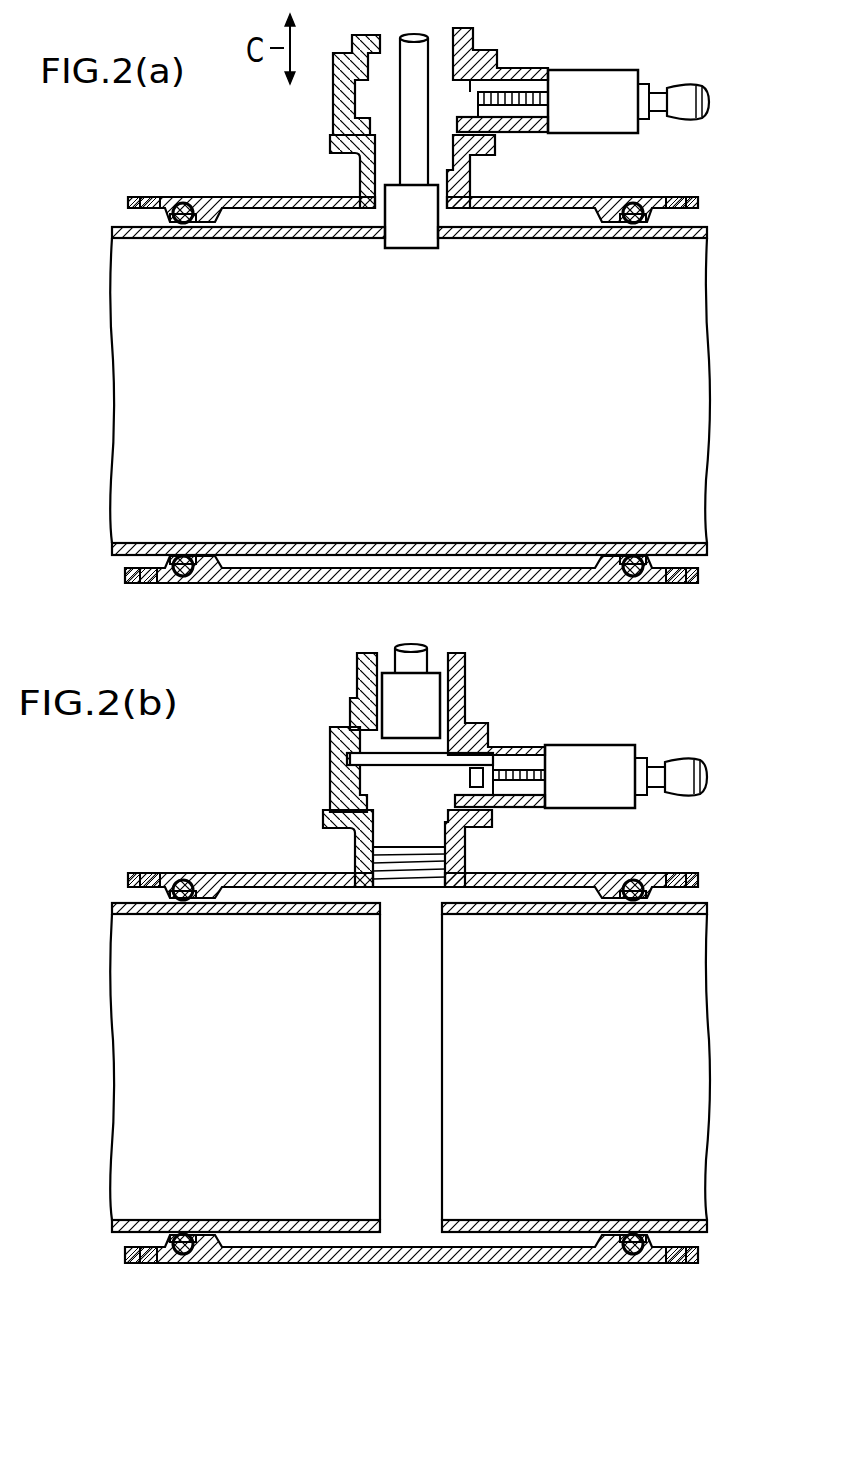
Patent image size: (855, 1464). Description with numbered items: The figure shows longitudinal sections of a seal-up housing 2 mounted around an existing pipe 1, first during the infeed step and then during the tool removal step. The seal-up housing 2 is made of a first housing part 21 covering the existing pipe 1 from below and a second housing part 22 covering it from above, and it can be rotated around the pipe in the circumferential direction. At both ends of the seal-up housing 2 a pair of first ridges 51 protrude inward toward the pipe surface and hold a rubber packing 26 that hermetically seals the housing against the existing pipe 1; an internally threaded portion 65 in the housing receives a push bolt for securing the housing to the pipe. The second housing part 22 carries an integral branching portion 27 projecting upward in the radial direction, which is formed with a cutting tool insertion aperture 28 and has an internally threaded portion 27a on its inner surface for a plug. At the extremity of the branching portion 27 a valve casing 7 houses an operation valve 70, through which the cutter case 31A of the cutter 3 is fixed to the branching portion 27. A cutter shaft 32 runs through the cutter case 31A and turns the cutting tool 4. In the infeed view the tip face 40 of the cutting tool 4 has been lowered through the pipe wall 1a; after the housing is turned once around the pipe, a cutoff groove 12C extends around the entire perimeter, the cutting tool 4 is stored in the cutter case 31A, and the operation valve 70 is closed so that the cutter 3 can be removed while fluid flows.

In FIG. 2A, the existing straight pipe 1 is at (483, 543).
In FIG. 2B, the existing straight pipe 1 is at (528, 1220).
In FIG. 2A, the pipe wall 1a is at (484, 239).
In FIG. 2B, the pipe wall 1a is at (548, 915).
In FIG. 2A, the seal-up housing 2 is at (241, 152).
In FIG. 2B, the seal-up housing 2 is at (219, 814).
In FIG. 2A, the cutter 3 is at (484, 33).
In FIG. 2B, the cutter 3 is at (474, 662).
In FIG. 2A, the cutting tool 4 is at (424, 240).
In FIG. 2B, the cutting tool 4 is at (402, 703).
In FIG. 2A, the valve casing 7 is at (345, 104).
In FIG. 2B, the valve casing 7 is at (338, 780).
In FIG. 2B, the cutoff groove 12C is at (414, 1048).
In FIG. 2A, the first housing part 21 is at (271, 581).
In FIG. 2B, the first housing part 21 is at (259, 1262).
In FIG. 2A, the second housing part 22 is at (275, 200).
In FIG. 2B, the second housing part 22 is at (250, 876).
In FIG. 2A, the rubber packing 26 is at (186, 204).
In FIG. 2B, the rubber packing 26 is at (186, 880).
In FIG. 2A, the branching portion 27 is at (462, 182).
In FIG. 2B, the branching portion 27 is at (460, 858).
In FIG. 2B, the internally threaded portion 27a is at (445, 870).
In FIG. 2A, the cutting tool insertion aperture 28 is at (366, 158).
In FIG. 2B, the cutting tool insertion aperture 28 is at (365, 835).
In FIG. 2A, the cutter case 31A is at (470, 42).
In FIG. 2B, the cutter case 31A is at (465, 695).
In FIG. 2A, the cutter shaft 32 is at (412, 85).
In FIG. 2B, the cutter shaft 32 is at (415, 655).
In FIG. 2A, the tip face 40 is at (390, 249).
In FIG. 2A, the first ridges 51 is at (204, 224).
In FIG. 2B, the first ridges 51 is at (204, 901).
In FIG. 2A, the internally threaded portion 65 is at (150, 198).
In FIG. 2B, the internally threaded portion 65 is at (150, 874).
In FIG. 2A, the operation valve 70 is at (600, 90).
In FIG. 2B, the operation valve 70 is at (590, 765).